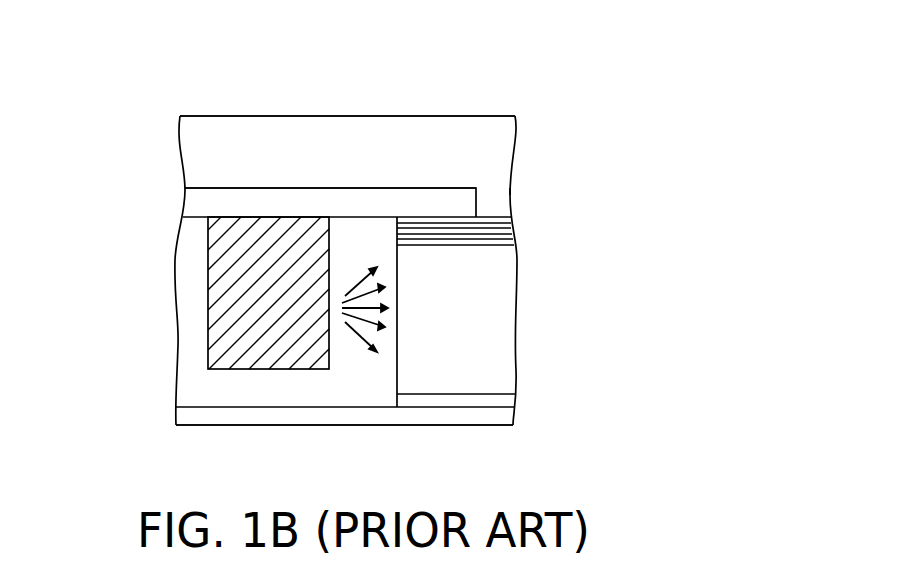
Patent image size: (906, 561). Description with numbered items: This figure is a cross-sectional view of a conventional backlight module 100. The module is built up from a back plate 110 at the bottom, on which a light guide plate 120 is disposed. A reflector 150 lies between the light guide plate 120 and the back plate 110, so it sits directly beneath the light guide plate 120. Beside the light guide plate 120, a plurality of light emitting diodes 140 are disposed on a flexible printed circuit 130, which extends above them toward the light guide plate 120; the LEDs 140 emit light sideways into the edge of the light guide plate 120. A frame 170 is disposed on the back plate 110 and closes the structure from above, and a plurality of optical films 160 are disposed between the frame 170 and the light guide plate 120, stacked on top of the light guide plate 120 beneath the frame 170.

The backlight module 100 is at (763, 477).
The back plate 110 is at (197, 416).
The light guide plate 120 is at (505, 313).
The flexible printed circuit 130 is at (200, 205).
The light emitting diodes 140 is at (220, 264).
The reflector 150 is at (505, 401).
The optical films 160 is at (531, 244).
The frame 170 is at (500, 148).